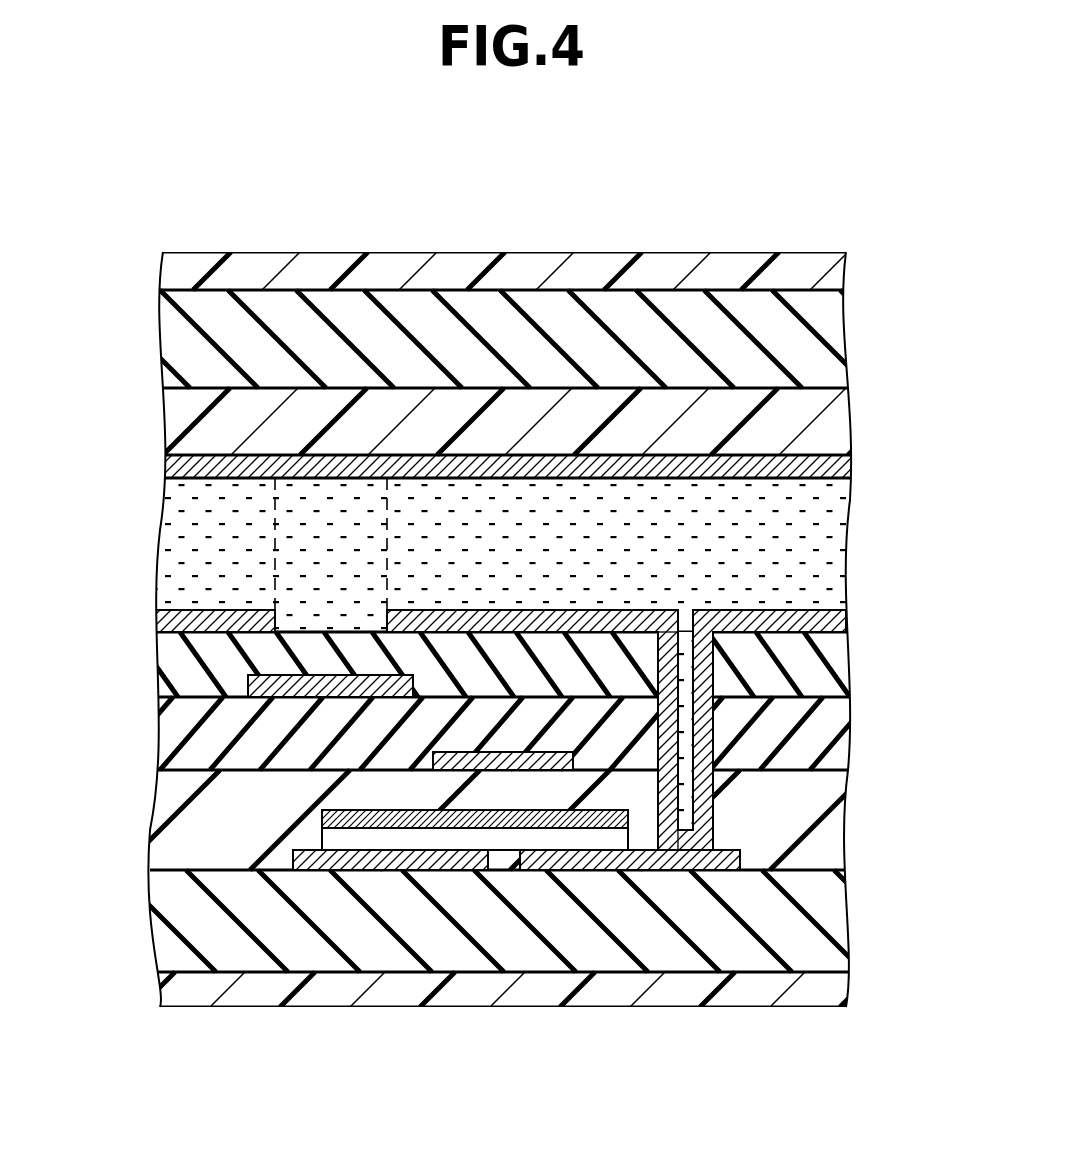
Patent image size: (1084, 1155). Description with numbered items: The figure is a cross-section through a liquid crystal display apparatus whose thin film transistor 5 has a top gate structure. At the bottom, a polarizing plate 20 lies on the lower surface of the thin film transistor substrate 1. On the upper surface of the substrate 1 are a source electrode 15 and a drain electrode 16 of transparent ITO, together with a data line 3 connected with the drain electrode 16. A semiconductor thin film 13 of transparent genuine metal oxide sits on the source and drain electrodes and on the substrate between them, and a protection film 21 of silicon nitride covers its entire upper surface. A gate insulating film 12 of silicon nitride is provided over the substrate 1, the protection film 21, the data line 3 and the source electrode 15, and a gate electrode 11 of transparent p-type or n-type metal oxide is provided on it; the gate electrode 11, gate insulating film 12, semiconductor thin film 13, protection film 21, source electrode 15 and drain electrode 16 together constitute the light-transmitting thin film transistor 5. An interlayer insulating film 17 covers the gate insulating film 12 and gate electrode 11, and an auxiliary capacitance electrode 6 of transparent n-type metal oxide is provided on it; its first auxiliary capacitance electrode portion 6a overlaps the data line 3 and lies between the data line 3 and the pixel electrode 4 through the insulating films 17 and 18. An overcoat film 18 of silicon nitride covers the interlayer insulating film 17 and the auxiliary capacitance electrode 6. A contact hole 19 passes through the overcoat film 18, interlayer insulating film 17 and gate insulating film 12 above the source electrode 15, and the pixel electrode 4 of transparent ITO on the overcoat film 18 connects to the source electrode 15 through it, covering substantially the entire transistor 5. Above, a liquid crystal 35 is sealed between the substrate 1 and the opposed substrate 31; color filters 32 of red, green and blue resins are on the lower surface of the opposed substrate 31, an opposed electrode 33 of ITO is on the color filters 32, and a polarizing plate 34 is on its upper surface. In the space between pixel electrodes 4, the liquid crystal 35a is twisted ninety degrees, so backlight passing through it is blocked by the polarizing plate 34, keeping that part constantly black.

The thin film transistor substrate 1 is at (800, 947).
The data line 3 is at (327, 858).
The pixel electrode 4 is at (810, 626).
The thin film transistor 5 is at (474, 742).
The auxiliary capacitance electrode 6 is at (303, 683).
The first auxiliary capacitance electrode portion 6a is at (330, 686).
The gate electrode 11 is at (457, 760).
The gate insulating film 12 is at (800, 844).
The semiconductor thin film 13 is at (447, 838).
The source electrode 15 is at (660, 860).
The drain electrode 16 is at (390, 858).
The interlayer insulating film 17 is at (800, 742).
The overcoat film 18 is at (805, 662).
The contact hole 19 is at (657, 650).
The polarizing plate 20 is at (800, 996).
The protection film 21 is at (573, 820).
The opposed substrate 31 is at (805, 347).
The color filters 32 is at (805, 416).
The opposed electrode 33 is at (728, 470).
The polarizing plate 34 is at (805, 272).
The liquid crystal 35 is at (805, 542).
The liquid crystal 35a is at (333, 505).